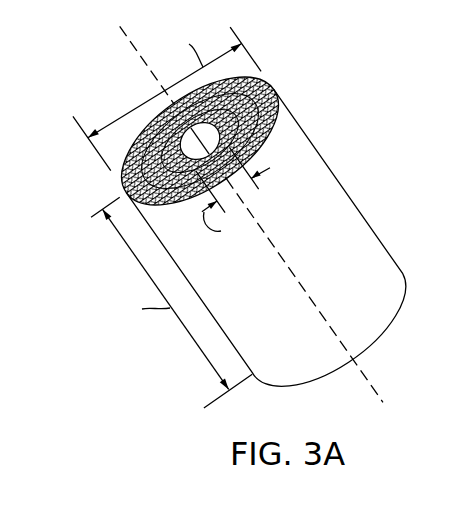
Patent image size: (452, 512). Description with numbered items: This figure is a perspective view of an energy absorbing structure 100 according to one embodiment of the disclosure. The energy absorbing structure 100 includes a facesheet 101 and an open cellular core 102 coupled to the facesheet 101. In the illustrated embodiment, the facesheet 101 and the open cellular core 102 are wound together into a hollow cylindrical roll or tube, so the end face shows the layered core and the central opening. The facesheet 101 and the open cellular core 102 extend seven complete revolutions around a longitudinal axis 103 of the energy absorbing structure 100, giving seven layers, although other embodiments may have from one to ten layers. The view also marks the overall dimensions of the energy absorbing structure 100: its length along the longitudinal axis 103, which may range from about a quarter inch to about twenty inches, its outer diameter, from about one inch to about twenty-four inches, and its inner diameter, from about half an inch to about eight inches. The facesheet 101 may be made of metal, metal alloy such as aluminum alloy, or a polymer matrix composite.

The energy absorbing structure 100 is at (381, 149).
The facesheet 101 is at (349, 212).
The open cellular core 102 is at (258, 78).
The longitudinal axis 103 is at (139, 53).